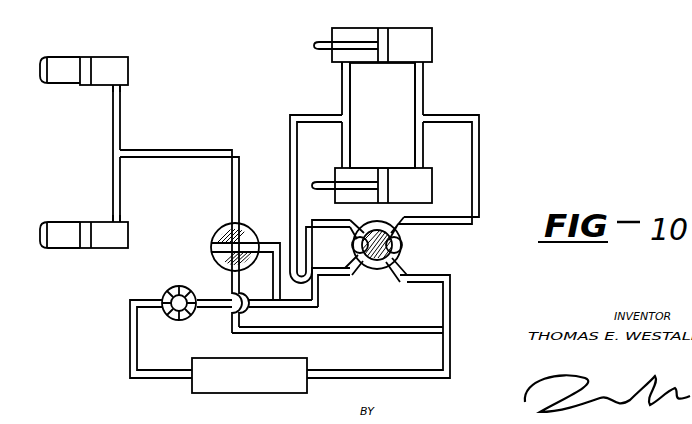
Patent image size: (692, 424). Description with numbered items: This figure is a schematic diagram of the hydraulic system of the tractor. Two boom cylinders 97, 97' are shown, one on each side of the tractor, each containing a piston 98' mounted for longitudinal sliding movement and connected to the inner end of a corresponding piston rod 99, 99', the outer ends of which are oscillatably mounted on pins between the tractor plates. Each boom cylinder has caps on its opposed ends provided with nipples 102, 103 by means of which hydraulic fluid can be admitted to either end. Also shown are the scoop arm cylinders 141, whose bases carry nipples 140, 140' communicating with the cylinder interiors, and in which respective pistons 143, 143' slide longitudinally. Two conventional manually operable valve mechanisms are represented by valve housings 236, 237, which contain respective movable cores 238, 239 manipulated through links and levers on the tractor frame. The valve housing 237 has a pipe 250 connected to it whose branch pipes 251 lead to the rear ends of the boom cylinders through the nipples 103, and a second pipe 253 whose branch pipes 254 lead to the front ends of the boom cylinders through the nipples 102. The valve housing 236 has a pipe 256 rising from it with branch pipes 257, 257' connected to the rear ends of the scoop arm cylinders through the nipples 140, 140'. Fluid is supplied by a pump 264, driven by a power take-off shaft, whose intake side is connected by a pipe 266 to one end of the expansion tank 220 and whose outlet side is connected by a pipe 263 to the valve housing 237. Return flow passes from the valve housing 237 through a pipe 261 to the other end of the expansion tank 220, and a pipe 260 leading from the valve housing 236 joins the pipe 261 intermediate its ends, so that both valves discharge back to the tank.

The piston 143' is at (60, 59).
The cylinder 141 is at (105, 60).
The piston 143 is at (60, 244).
The nipple 140' is at (136, 89).
The branch pipe 257' is at (134, 153).
The branch pipe 257 is at (133, 191).
The nipple 140 is at (134, 214).
The pipe 256 is at (200, 150).
The valve housing 236 is at (212, 252).
The movable core 238 is at (222, 236).
The pipe 263 is at (318, 296).
The pump 264 is at (165, 292).
The pipe 266 is at (130, 341).
The expansion tank 220 is at (254, 393).
The pipe 260 is at (332, 327).
The pipe 261 is at (450, 309).
The pipe 250 is at (290, 182).
The valve housing 237 is at (398, 250).
The movable core 239 is at (395, 245).
The pipe 253 is at (479, 167).
The branch pipe 251 is at (342, 94).
The branch pipe 254 is at (416, 89).
The nipple 102 is at (423, 69).
The nipple 103 is at (342, 67).
The cylinder 97' is at (382, 35).
The piston 98' is at (395, 115).
The piston rod 99' is at (339, 36).
The cylinder 97 is at (383, 176).
The piston rod 99 is at (341, 176).